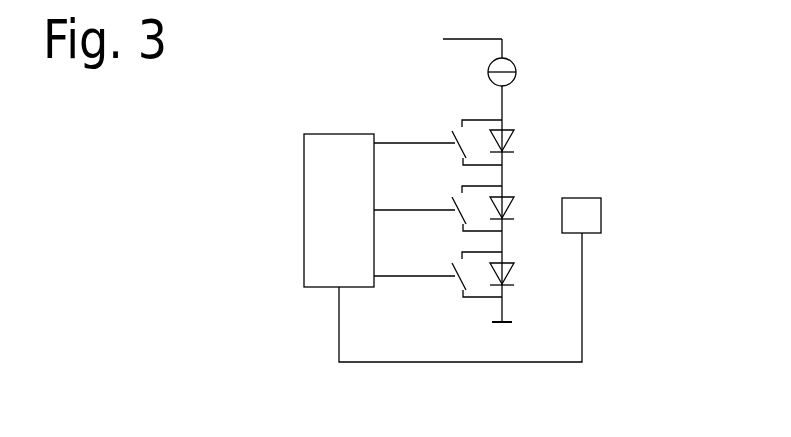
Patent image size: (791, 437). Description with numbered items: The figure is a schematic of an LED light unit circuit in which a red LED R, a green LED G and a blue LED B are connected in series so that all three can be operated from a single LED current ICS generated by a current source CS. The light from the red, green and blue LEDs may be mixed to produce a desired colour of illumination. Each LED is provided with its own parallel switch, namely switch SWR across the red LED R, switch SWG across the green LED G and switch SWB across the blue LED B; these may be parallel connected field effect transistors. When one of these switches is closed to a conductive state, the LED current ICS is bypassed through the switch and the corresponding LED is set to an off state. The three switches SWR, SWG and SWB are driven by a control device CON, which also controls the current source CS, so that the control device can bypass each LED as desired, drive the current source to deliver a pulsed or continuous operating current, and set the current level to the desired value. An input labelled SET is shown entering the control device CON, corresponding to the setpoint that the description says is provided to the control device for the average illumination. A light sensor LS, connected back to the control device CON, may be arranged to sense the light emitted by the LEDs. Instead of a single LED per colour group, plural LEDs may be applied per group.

The control device CON is at (304, 148).
The setting signal input SET is at (299, 211).
The light sensor LS is at (587, 201).
The current source CS is at (512, 63).
The LED current ICS is at (513, 92).
The red LED R is at (512, 141).
The green LED G is at (513, 208).
The blue LED B is at (512, 274).
The parallel switch SWR is at (438, 142).
The parallel switch SWG is at (438, 208).
The parallel switch SWB is at (438, 274).